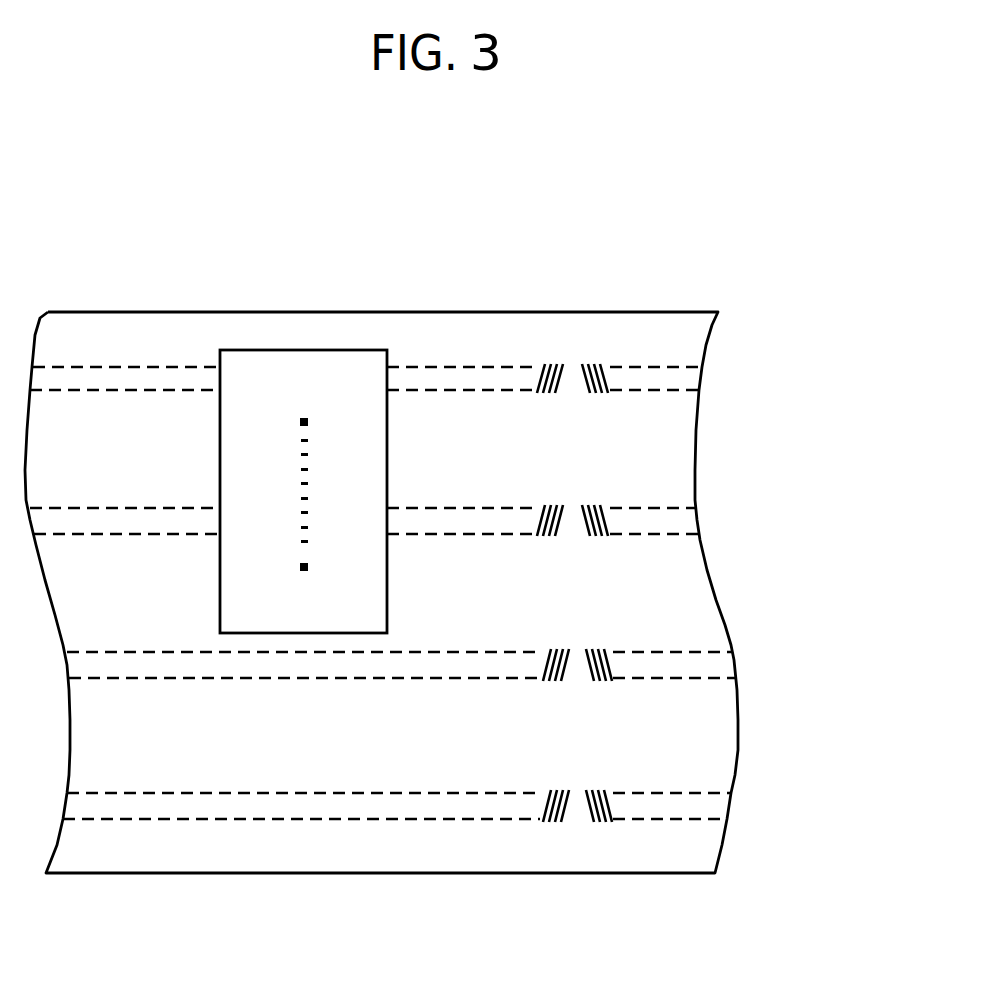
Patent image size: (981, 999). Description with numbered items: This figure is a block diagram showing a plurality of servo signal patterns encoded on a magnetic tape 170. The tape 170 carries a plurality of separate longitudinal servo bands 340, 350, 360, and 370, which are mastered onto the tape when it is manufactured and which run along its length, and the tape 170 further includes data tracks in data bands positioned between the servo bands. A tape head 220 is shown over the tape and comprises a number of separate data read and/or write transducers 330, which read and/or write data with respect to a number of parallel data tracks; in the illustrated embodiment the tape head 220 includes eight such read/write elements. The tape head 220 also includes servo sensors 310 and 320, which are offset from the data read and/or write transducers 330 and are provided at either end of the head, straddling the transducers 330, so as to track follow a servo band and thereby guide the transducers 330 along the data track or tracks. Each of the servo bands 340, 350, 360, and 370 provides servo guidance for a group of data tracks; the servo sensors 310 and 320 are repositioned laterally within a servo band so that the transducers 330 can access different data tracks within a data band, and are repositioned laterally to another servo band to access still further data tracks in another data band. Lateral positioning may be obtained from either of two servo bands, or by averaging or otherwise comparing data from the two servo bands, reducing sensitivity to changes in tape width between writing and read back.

The magnetic tape 170 is at (505, 290).
The tape head 220 is at (219, 458).
The servo sensor 310 is at (304, 418).
The servo sensor 320 is at (303, 571).
The data read and/or write transducers 330 is at (315, 416).
The servo band 340 is at (703, 378).
The servo band 350 is at (710, 518).
The servo band 360 is at (735, 660).
The servo band 370 is at (738, 807).